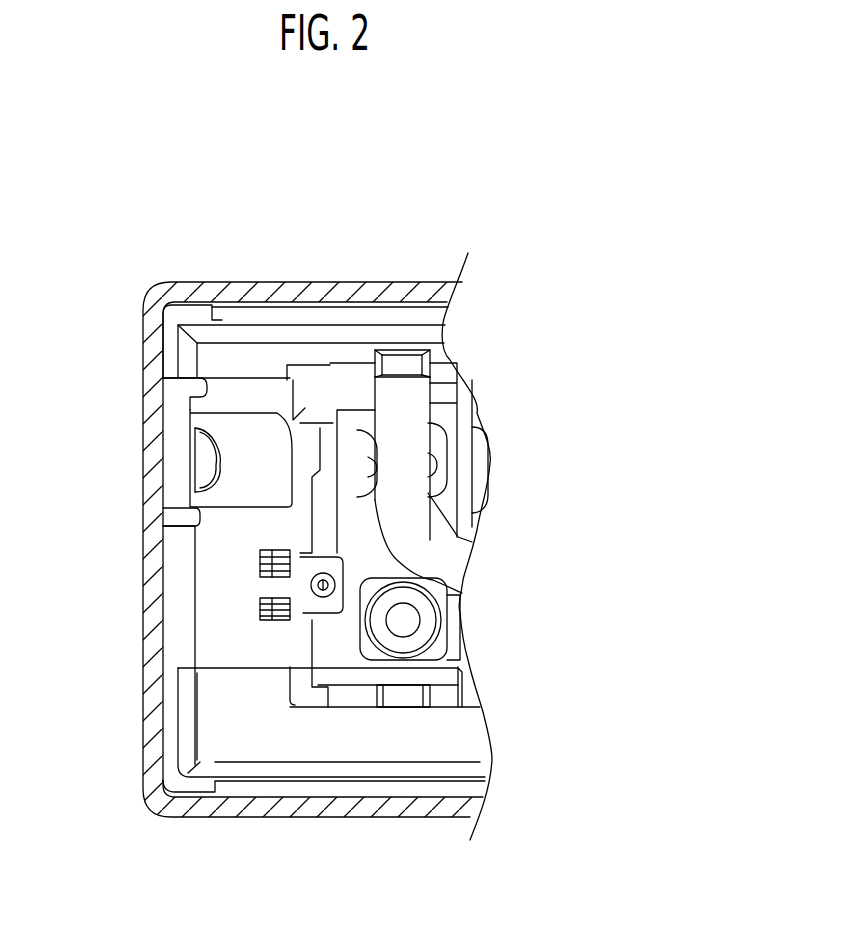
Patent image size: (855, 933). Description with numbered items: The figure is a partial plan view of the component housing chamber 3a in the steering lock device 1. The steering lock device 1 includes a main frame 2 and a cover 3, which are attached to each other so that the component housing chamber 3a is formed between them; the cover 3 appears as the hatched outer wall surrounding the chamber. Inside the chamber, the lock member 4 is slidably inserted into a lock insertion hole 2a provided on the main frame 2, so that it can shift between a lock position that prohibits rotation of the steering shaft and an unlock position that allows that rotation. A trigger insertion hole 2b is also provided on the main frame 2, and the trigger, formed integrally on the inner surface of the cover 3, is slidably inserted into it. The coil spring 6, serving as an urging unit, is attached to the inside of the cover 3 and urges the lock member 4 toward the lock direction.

The steering lock device 1 is at (355, 257).
The main frame 2 is at (203, 705).
The lock insertion hole 2a is at (418, 416).
The trigger insertion hole 2b is at (310, 587).
The cover 3 is at (150, 597).
The component housing chamber 3a is at (170, 650).
The lock member 4 is at (410, 517).
The coil spring 6 is at (443, 628).